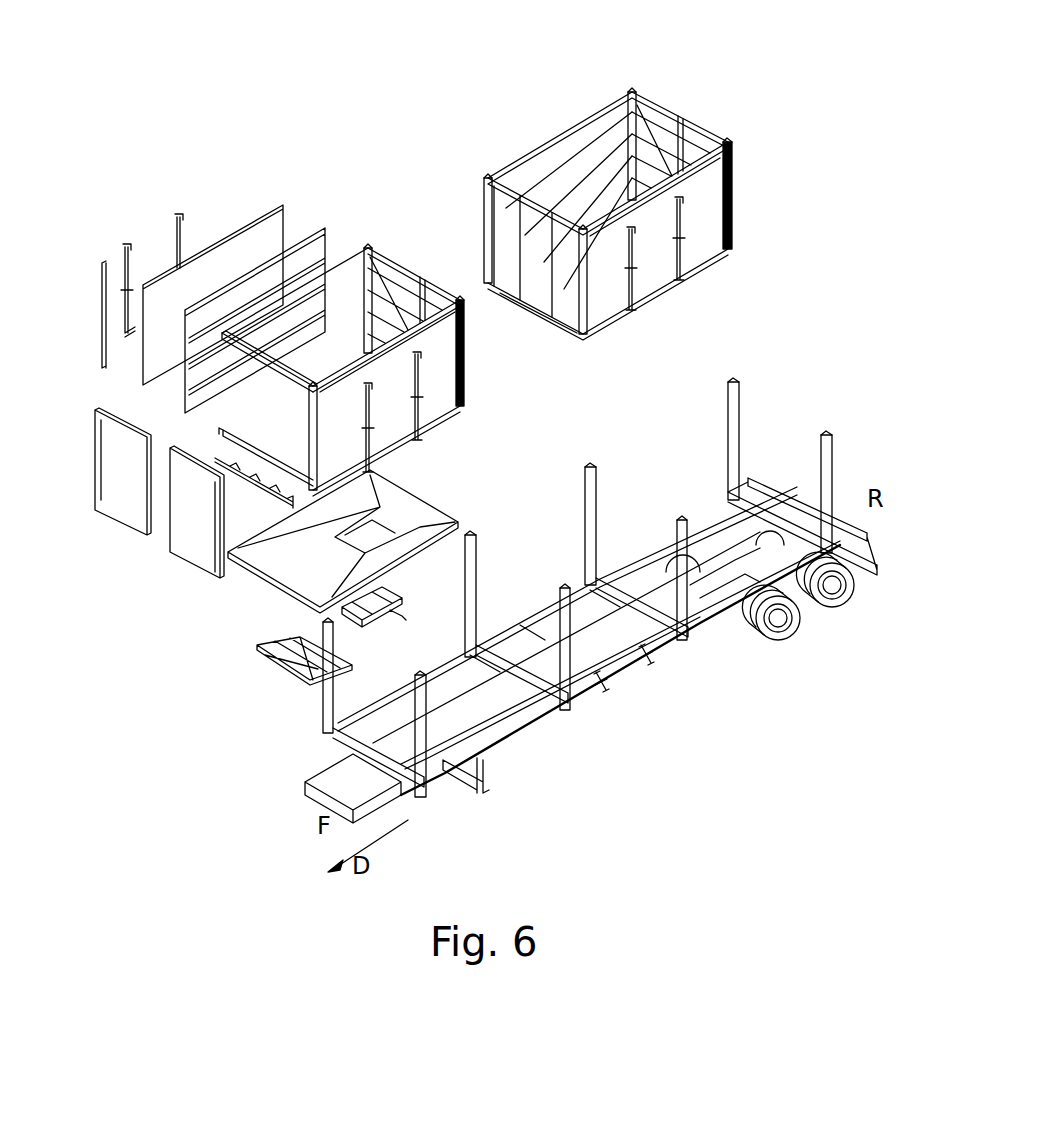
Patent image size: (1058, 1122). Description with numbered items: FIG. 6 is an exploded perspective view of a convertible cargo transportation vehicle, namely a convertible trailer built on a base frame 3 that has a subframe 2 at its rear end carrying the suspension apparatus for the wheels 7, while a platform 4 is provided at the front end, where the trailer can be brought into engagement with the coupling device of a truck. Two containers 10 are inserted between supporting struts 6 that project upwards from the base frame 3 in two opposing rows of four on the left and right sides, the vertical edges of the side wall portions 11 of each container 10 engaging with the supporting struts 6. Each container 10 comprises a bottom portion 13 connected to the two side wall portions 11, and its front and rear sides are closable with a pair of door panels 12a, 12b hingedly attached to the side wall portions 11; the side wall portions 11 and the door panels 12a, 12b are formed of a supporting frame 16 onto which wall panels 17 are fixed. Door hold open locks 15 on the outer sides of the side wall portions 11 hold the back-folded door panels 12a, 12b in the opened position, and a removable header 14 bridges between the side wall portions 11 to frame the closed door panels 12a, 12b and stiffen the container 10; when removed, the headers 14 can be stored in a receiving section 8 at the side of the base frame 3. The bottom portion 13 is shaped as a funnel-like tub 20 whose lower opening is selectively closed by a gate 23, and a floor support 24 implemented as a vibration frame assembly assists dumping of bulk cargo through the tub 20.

The subframe 2 is at (725, 620).
The base frame 3 is at (510, 730).
The platform 4 is at (340, 790).
The supporting struts 6 is at (740, 410).
The wheels 7 is at (788, 642).
The receiving section 8 is at (600, 690).
The container 10 is at (614, 78).
The side wall portions 11 is at (572, 50).
The door panel 12a is at (513, 225).
The door panel 12b is at (553, 257).
The bottom portion 13 is at (410, 490).
The removable header 14 is at (673, 112).
The door hold open locks 15 is at (685, 237).
The supporting frame 16 is at (583, 147).
The wall panels 17 is at (540, 165).
The funnel-like tub 20 is at (365, 520).
The gate 23 is at (368, 625).
The floor support 24 is at (275, 665).